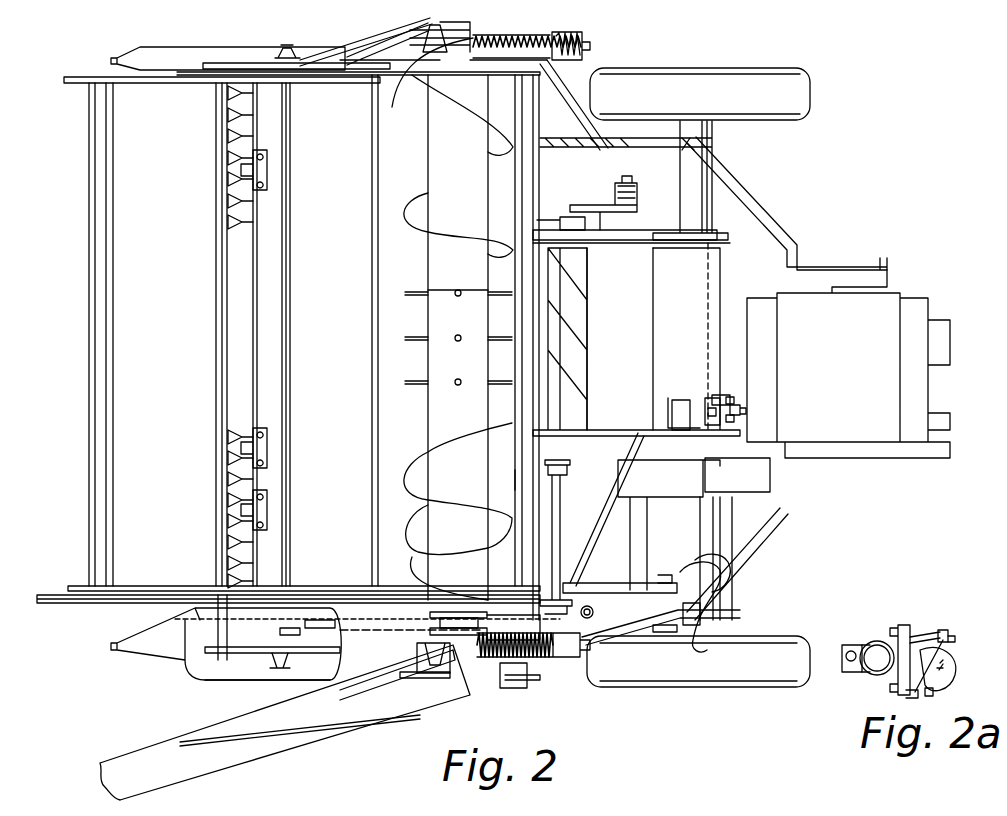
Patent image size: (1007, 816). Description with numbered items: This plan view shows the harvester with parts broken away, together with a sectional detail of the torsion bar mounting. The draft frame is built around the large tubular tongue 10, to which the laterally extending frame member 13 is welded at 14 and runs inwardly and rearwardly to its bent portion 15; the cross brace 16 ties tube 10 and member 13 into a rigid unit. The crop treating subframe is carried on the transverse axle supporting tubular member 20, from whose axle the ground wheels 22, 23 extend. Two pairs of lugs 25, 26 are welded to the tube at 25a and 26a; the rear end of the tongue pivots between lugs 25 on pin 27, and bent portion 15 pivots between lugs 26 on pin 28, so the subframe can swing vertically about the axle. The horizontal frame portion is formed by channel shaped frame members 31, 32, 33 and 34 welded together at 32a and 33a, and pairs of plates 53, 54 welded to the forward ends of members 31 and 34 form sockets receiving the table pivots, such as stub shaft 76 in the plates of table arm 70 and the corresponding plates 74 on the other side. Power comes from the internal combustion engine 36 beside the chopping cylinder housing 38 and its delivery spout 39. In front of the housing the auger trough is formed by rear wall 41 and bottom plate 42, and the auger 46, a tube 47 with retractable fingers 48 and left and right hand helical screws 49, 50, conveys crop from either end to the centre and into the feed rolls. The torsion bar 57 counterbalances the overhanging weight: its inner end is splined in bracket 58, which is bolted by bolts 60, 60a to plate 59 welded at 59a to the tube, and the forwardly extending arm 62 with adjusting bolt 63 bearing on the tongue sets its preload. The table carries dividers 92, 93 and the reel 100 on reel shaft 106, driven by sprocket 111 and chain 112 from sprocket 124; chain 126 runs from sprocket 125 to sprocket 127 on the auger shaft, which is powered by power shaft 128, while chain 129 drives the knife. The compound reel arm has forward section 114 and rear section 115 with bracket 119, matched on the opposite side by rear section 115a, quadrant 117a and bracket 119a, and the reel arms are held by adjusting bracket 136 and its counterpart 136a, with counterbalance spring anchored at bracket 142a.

In FIG. 2, the tongue member 10 is at (258, 752).
In FIG. 2, the laterally extending frame member 13 is at (610, 526).
In FIG. 2, the weld 14 is at (510, 614).
In FIG. 2, the bent portion 15 is at (708, 410).
In FIG. 2, the cross brace 16 is at (620, 540).
In FIG. 2, the axle supporting tubular member 20 is at (712, 143).
In FIG. 2A, the axle supporting tubular member 20 is at (875, 640).
In FIG. 2, the ground wheel 22 is at (770, 636).
In FIG. 2, the ground wheel 23 is at (786, 121).
In FIG. 2, the lugs 25 is at (665, 575).
In FIG. 2, the weld 25a is at (724, 558).
In FIG. 2, the lugs 26 is at (668, 400).
In FIG. 2A, the lugs 26 is at (850, 673).
In FIG. 2, the weld 26a is at (712, 395).
In FIG. 2, the pin 27 is at (660, 645).
In FIG. 2, the pin 28 is at (706, 400).
In FIG. 2A, the pin 28 is at (848, 645).
In FIG. 2, the channel shaped frame member 31 is at (548, 67).
In FIG. 2, the channel shaped frame member 32 is at (770, 216).
In FIG. 2, the weld 32a is at (688, 144).
In FIG. 2, the channel shaped frame member 33 is at (765, 535).
In FIG. 2, the weld 33a is at (700, 640).
In FIG. 2, the channel shaped frame member 34 is at (628, 595).
In FIG. 2, the internal combustion engine 36 is at (914, 302).
In FIG. 2, the chopping cylinder housing 38 is at (630, 338).
In FIG. 2, the delivery spout 39 is at (636, 306).
In FIG. 2, the rear wall 41 is at (520, 478).
In FIG. 2, the bottom plate 42 is at (510, 200).
In FIG. 2, the auger 46 is at (415, 368).
In FIG. 2, the tube 47 is at (427, 425).
In FIG. 2, the retractable fingers 48 is at (405, 338).
In FIG. 2, the helical screw 49 is at (418, 563).
In FIG. 2, the helical screw 50 is at (413, 217).
In FIG. 2, the plates 53 is at (480, 26).
In FIG. 2, the plates 54 is at (482, 686).
In FIG. 2, the torsion bar 57 is at (733, 583).
In FIG. 2A, the torsion bar 57 is at (948, 668).
In FIG. 2, the bracket 58 is at (740, 419).
In FIG. 2A, the bracket 58 is at (942, 633).
In FIG. 2, the plate 59 is at (733, 400).
In FIG. 2A, the plate 59 is at (898, 625).
In FIG. 2, the weld 59a is at (740, 397).
In FIG. 2, the bolt 60 is at (740, 410).
In FIG. 2A, the bolt 60 is at (955, 638).
In FIG. 2A, the bolt 60a is at (930, 693).
In FIG. 2, the forwardly extending arm 62 is at (632, 642).
In FIG. 2, the adjusting bolt 63 is at (587, 605).
In FIG. 2, the arm 70 is at (345, 720).
In FIG. 2, the plates 74 is at (393, 34).
In FIG. 2, the stub shaft 76 is at (460, 680).
In FIG. 2, the divider 92 is at (143, 660).
In FIG. 2, the divider 93 is at (137, 55).
In FIG. 2, the reel 100 is at (78, 416).
In FIG. 2, the reel shaft 106 is at (214, 322).
In FIG. 2, the sprocket 111 is at (176, 620).
In FIG. 2, the chain 112 is at (285, 612).
In FIG. 2, the forward section 114 is at (248, 672).
In FIG. 2, the rear section 115 is at (400, 700).
In FIG. 2, the rear section 115a is at (376, 52).
In FIG. 2, the quadrant 117a is at (313, 56).
In FIG. 2, the bracket 119 is at (278, 672).
In FIG. 2, the bracket 119a is at (280, 58).
In FIG. 2, the sprocket 124 is at (318, 628).
In FIG. 2, the sprocket 125 is at (295, 628).
In FIG. 2, the chain 126 is at (395, 628).
In FIG. 2, the sprocket 127 is at (452, 612).
In FIG. 2, the power shaft 128 is at (558, 505).
In FIG. 2, the chain 129 is at (365, 610).
In FIG. 2, the adjusting bracket 136 is at (427, 690).
In FIG. 2, the adjusting bracket 136a is at (426, 86).
In FIG. 2, the bracket 142a is at (572, 32).